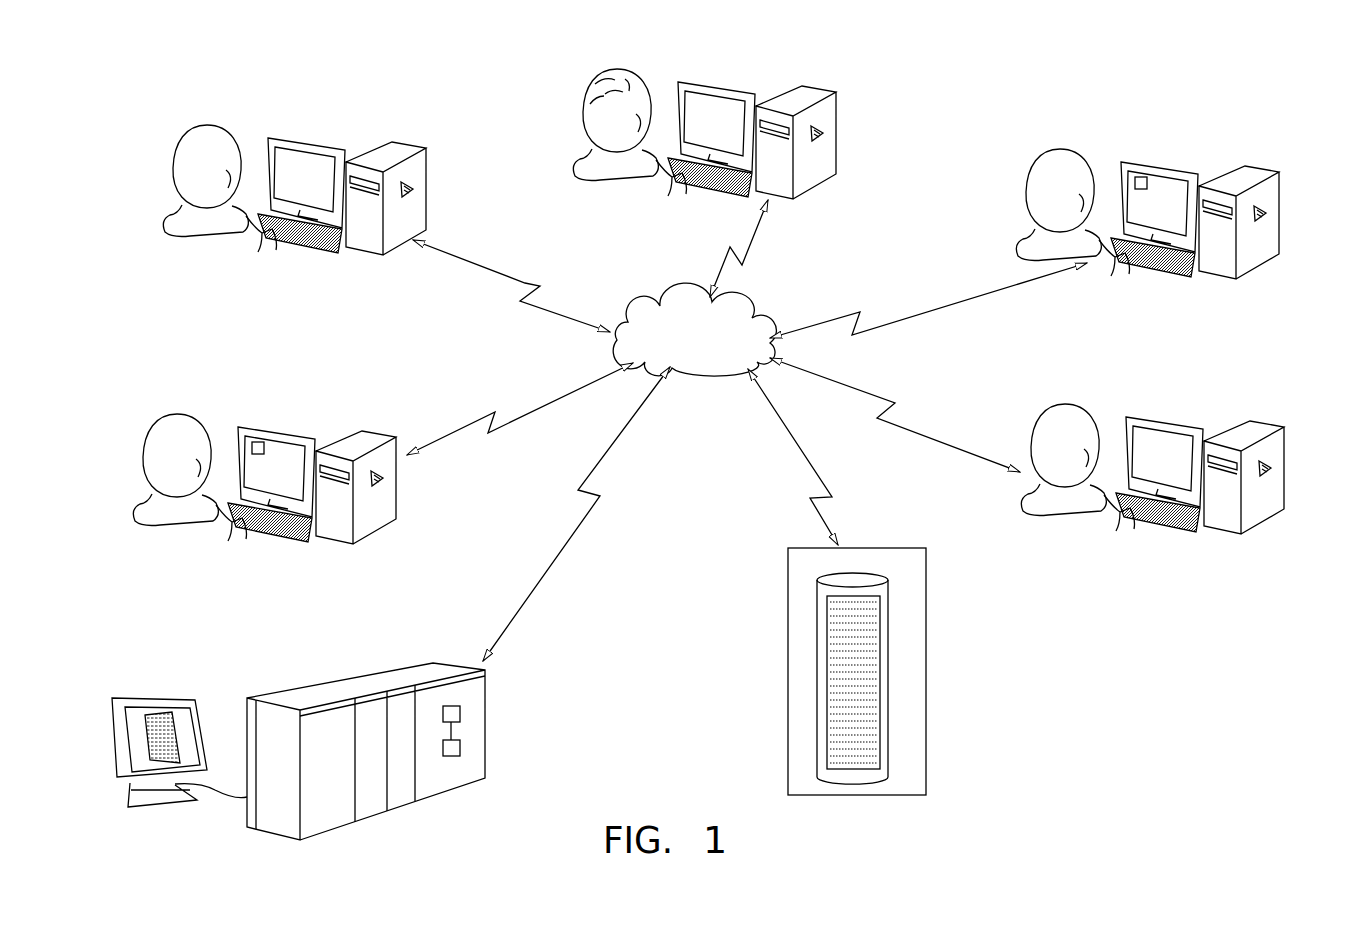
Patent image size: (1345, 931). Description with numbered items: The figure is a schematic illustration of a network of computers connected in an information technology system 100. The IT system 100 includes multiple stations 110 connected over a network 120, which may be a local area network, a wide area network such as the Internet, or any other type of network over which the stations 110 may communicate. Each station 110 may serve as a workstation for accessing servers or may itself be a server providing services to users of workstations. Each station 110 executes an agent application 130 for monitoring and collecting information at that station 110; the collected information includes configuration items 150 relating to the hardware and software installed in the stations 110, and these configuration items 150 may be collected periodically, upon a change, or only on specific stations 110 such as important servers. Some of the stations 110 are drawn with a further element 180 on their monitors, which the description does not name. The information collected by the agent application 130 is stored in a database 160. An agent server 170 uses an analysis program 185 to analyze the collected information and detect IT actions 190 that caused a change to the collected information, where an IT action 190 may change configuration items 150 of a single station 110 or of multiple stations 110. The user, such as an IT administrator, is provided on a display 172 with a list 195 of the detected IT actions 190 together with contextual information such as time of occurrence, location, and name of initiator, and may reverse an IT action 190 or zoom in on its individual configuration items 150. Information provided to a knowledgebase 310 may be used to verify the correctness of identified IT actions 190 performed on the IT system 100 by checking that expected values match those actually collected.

The information technology system 100 is at (422, 73).
The station 110 is at (374, 159).
The network 120 is at (760, 310).
The agent application 130 is at (412, 190).
The configuration items 150 is at (880, 645).
The database 160 is at (926, 628).
The agent server 170 is at (330, 683).
The display 172 is at (170, 697).
The client application 180 is at (292, 153).
The analysis program 185 is at (461, 710).
The IT actions 190 is at (174, 734).
The list 195 is at (178, 716).
The knowledgebase 310 is at (461, 747).